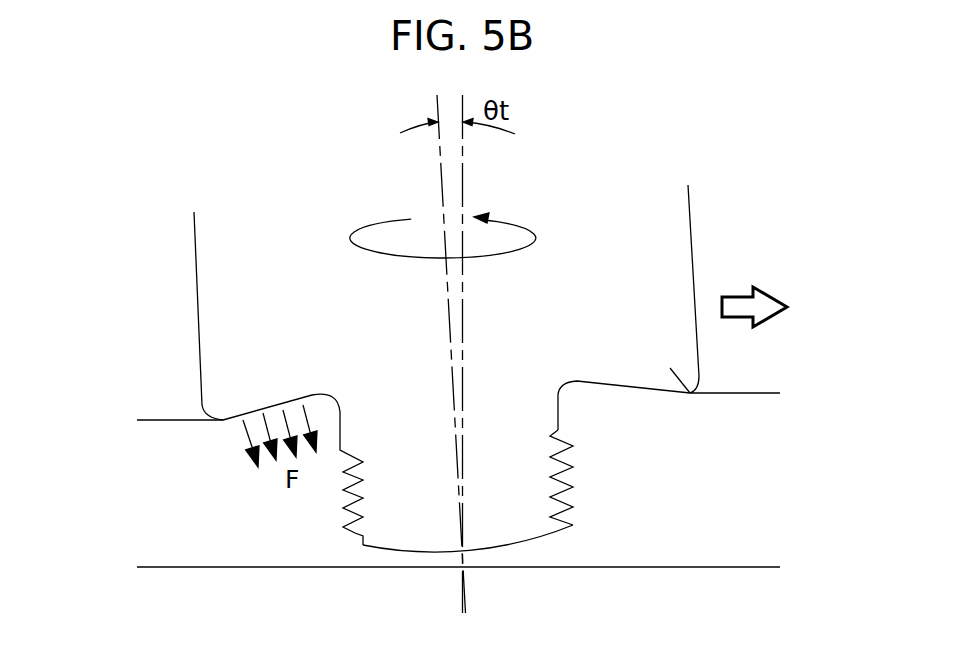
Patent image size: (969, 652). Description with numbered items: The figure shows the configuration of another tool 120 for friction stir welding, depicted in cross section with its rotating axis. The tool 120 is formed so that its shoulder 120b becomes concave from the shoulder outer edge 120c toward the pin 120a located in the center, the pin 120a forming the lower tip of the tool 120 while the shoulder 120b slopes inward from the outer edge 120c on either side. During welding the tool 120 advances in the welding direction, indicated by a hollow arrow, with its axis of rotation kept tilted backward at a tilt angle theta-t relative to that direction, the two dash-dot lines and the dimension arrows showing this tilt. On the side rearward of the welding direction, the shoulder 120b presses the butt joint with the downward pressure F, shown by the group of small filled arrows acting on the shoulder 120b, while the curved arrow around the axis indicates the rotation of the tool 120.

The tool 120 is at (756, 227).
The pin 120a is at (415, 505).
The shoulder 120b is at (622, 390).
The shoulder outer edge 120c is at (670, 368).